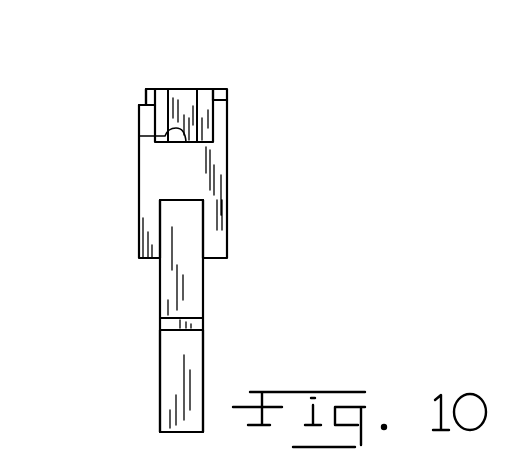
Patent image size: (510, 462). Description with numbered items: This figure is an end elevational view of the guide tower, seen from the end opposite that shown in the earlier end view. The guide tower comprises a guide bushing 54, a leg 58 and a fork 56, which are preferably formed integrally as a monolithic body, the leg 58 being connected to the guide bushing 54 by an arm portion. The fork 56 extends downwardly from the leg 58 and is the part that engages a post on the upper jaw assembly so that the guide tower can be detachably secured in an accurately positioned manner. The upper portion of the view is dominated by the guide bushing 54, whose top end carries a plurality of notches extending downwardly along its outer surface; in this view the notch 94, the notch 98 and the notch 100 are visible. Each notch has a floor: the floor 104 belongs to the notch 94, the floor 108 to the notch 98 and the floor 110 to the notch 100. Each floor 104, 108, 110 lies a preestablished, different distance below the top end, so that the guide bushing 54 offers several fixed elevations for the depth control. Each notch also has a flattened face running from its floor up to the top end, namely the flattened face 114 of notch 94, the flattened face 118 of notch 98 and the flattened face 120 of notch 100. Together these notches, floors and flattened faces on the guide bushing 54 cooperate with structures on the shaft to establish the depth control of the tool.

The guide bushing 54 is at (218, 173).
The fork 56 is at (168, 368).
The leg 58 is at (192, 301).
The notch 94 is at (217, 77).
The notch 98 is at (112, 91).
The notch 100 is at (177, 158).
The floor 104 is at (225, 95).
The floor 108 is at (145, 99).
The floor 110 is at (140, 136).
The flattened face 114 is at (222, 92).
The flattened face 118 is at (142, 98).
The flattened face 120 is at (185, 118).